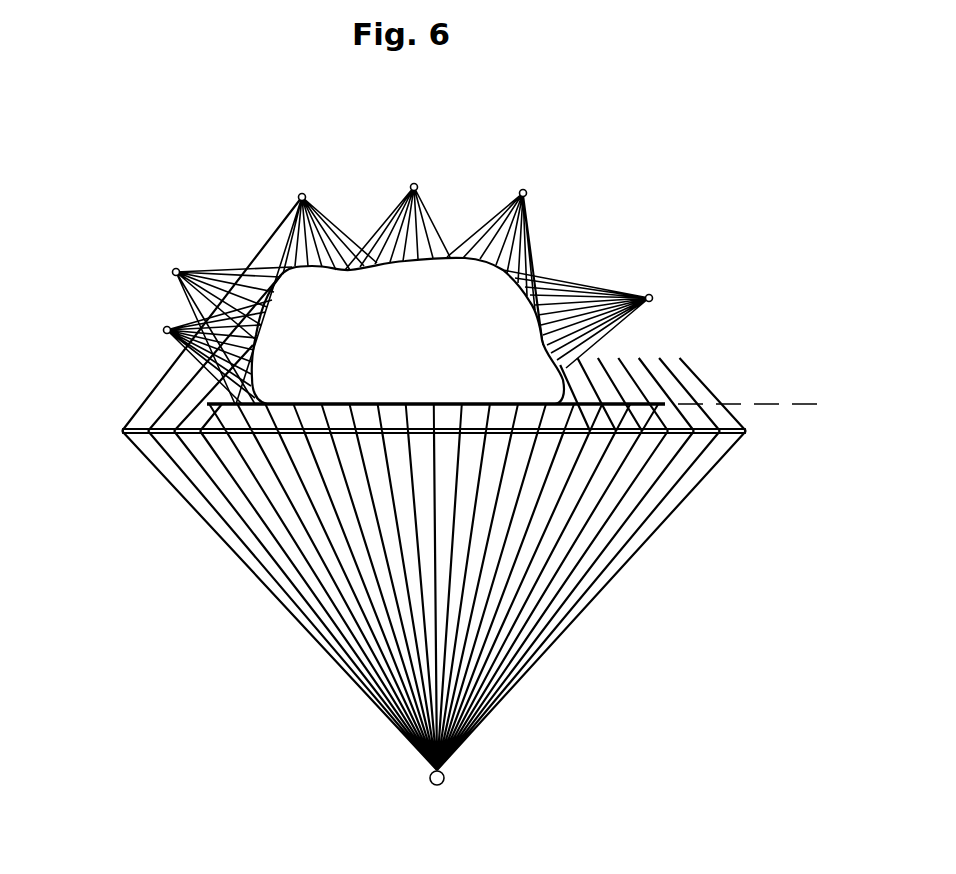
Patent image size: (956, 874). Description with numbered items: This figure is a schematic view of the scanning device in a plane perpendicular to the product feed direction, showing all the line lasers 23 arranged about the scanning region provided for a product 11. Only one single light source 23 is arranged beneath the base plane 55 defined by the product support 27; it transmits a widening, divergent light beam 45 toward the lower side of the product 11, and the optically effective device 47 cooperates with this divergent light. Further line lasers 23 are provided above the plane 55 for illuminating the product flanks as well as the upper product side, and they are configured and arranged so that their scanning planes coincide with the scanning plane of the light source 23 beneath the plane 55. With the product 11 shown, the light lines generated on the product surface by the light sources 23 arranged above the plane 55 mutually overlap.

The product 11 is at (424, 344).
The light source 23 is at (300, 193).
The product support 27 is at (216, 399).
The divergent light beam 45 is at (244, 594).
The optically effective device 47 is at (122, 433).
The base plane 55 is at (788, 402).